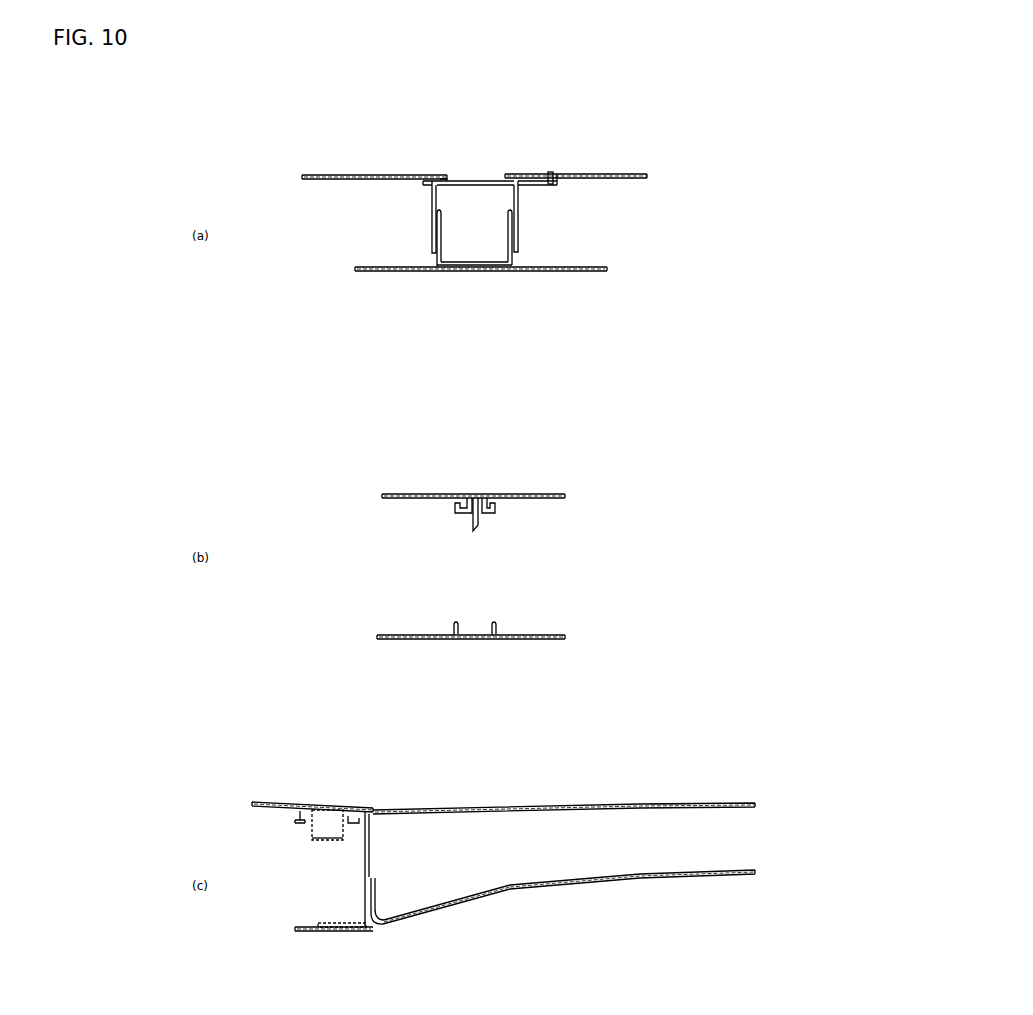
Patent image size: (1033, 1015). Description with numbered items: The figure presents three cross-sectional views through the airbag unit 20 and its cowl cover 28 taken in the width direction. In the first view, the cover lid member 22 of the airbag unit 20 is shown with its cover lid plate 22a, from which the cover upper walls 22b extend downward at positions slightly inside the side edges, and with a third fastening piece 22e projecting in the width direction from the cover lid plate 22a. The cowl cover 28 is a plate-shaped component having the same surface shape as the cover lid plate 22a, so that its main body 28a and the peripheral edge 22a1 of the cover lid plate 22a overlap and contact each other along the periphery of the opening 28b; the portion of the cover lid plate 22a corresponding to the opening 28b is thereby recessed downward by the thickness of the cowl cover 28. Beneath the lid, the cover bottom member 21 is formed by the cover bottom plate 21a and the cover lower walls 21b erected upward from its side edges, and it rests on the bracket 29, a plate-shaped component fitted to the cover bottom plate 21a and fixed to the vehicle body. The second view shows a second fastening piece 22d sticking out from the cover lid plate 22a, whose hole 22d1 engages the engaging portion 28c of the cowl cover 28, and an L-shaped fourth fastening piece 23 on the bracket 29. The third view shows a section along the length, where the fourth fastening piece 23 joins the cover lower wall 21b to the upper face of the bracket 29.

The airbag unit 20 is at (496, 156).
The cover bottom member 21 is at (444, 242).
The cover bottom plate 21a is at (472, 267).
The cover lower wall 21b is at (508, 256).
The cover lid member 22 is at (521, 232).
The cover lid plate 22a is at (487, 182).
The peripheral edge of the cover lid plate 22a1 is at (433, 178).
The cover upper wall 22b is at (432, 195).
The second fastening piece 22d is at (455, 507).
The hole 22d1 is at (483, 514).
The third fastening piece 22e is at (537, 184).
The fourth fastening piece 23 is at (497, 625).
The cowl cover 28 is at (550, 173).
The main body 28a is at (590, 175).
The opening 28b is at (447, 175).
The engaging portion 28c is at (467, 517).
The bracket 29 is at (397, 272).